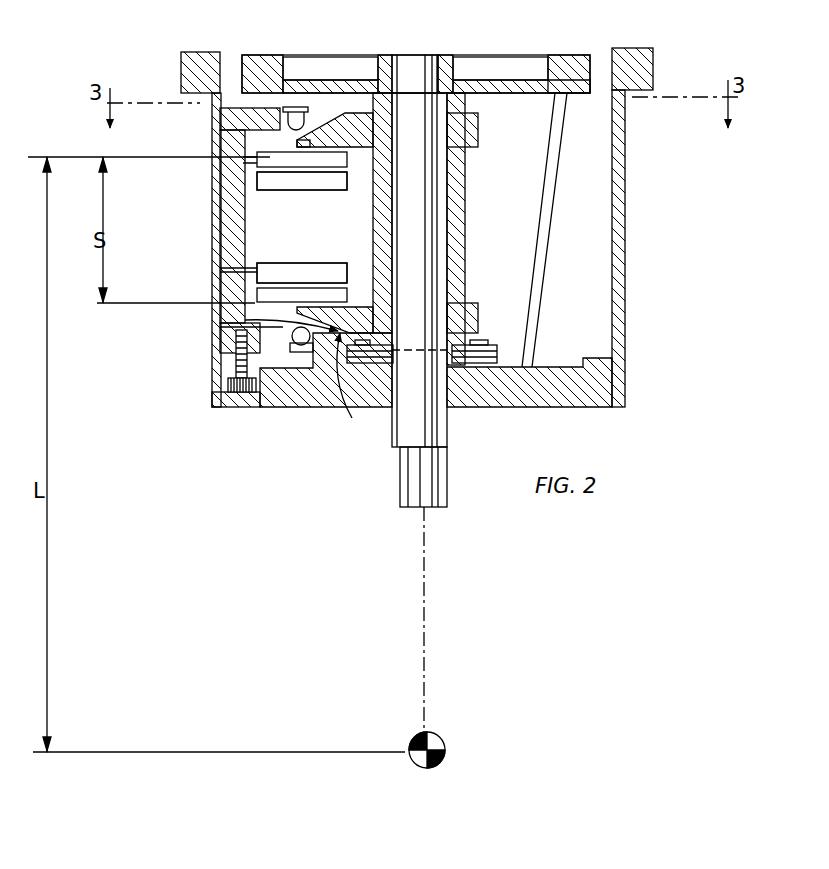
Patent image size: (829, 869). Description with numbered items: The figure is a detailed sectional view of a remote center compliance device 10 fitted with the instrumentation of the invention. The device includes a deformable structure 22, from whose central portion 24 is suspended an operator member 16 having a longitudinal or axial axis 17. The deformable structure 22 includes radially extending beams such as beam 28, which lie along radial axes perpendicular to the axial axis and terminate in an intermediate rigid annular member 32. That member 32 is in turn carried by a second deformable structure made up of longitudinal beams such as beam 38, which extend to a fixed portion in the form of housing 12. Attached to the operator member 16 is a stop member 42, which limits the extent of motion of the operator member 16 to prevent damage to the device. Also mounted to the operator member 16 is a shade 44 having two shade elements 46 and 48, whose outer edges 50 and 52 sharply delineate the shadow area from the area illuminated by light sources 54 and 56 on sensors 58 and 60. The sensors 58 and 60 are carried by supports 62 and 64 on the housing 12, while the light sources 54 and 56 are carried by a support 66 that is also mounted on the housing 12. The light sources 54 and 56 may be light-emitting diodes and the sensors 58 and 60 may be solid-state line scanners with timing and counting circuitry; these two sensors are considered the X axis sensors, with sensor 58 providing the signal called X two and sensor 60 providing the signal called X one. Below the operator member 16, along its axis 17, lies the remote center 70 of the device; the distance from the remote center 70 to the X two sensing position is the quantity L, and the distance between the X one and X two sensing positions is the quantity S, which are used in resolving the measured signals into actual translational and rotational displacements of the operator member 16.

The remote center compliance device 10 is at (697, 46).
The housing 12 is at (212, 212).
The operator member 16 is at (400, 458).
The longitudinal or axial axis 17 is at (428, 580).
The deformable structure 22 is at (412, 52).
The central portion 24 is at (405, 55).
The radially extending beam 28 is at (487, 84).
The intermediate rigid annular member 32 is at (263, 68).
The longitudinal beam 38 is at (535, 295).
The stop member 42 is at (478, 363).
The shade 44 is at (356, 389).
The shade element 46 is at (360, 122).
The shade element 48 is at (336, 342).
The outer edge 50 is at (306, 140).
The outer edge 52 is at (245, 320).
The light source 54 is at (297, 105).
The light source 56 is at (298, 345).
The sensor 58 is at (257, 160).
The sensor 60 is at (257, 295).
The support 62 is at (312, 190).
The support 64 is at (312, 263).
The support 66 is at (232, 118).
The remote center 70 is at (440, 740).